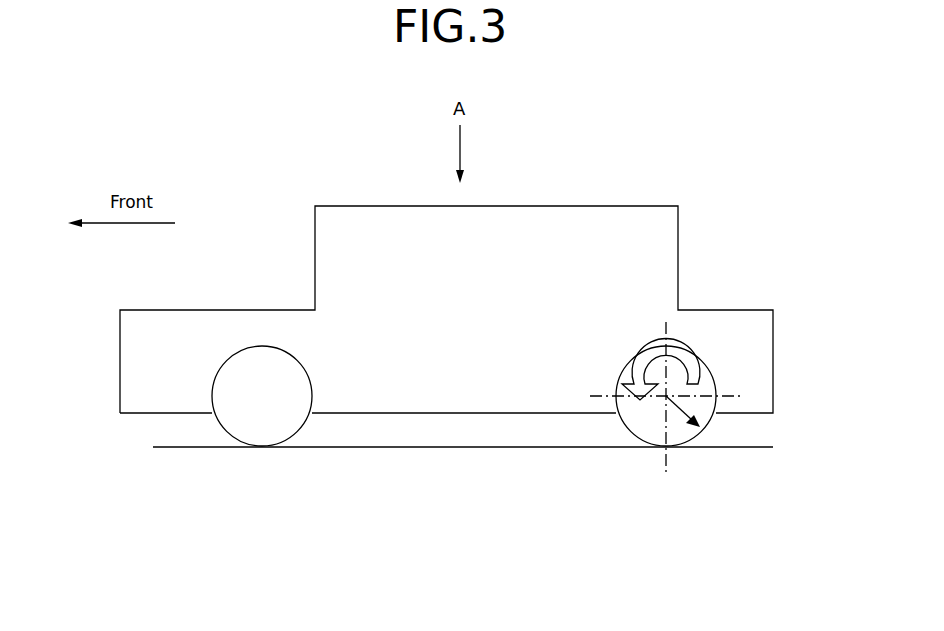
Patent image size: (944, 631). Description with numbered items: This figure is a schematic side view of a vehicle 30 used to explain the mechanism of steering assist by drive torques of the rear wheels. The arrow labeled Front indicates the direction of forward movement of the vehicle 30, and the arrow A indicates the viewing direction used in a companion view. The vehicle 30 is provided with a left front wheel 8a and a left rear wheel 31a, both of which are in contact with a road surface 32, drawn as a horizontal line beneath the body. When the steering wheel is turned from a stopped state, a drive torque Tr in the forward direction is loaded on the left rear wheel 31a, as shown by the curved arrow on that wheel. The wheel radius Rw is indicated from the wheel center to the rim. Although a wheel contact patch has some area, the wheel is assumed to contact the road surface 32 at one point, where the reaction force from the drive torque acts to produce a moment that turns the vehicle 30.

The vehicle 30 is at (600, 206).
The left front wheel 8a is at (262, 433).
The road surface 32 is at (385, 447).
The left rear wheel 31a is at (647, 438).